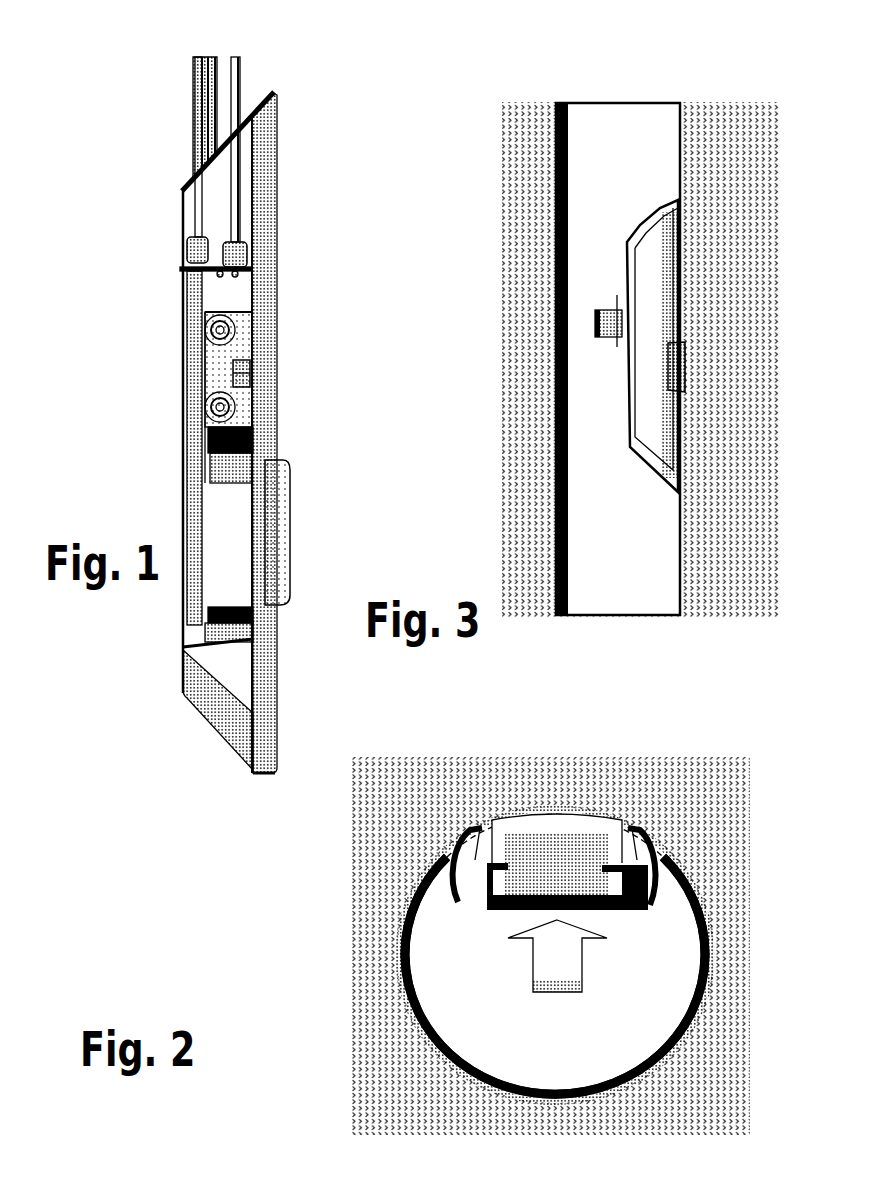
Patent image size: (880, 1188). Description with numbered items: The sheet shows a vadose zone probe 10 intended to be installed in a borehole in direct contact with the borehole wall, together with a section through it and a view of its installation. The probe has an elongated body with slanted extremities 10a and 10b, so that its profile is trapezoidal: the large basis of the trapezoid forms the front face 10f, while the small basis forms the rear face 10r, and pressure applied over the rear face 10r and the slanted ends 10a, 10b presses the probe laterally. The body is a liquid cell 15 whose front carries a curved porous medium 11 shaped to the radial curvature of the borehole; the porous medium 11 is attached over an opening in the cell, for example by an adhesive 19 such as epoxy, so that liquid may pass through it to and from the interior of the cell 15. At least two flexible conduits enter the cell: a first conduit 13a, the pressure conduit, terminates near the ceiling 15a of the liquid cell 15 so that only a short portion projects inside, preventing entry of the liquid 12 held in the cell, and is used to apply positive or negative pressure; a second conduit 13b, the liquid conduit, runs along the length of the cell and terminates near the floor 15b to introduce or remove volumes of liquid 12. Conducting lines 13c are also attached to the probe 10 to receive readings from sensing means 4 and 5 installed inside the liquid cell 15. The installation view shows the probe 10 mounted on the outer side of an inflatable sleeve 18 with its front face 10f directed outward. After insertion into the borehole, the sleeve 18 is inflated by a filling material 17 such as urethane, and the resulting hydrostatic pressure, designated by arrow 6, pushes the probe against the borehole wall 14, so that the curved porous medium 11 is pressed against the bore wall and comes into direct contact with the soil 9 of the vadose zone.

In FIG. 1, the sensing means 4 is at (222, 393).
In FIG. 1, the sensing means 5 is at (248, 372).
In FIG. 3, the arrow designating hydrostatic pressure 6 is at (595, 325).
In FIG. 2, the arrow designating hydrostatic pressure 6 is at (582, 962).
In FIG. 3, the soil 9 is at (688, 688).
In FIG. 2, the soil 9 is at (718, 790).
In FIG. 1, the vadose zone probe 10 is at (196, 421).
In FIG. 3, the vadose zone probe 10 is at (660, 252).
In FIG. 1, the slanted extremity 10a is at (264, 95).
In FIG. 1, the slanted extremity 10b is at (213, 733).
In FIG. 1, the front face 10f is at (277, 273).
In FIG. 1, the rear face 10r is at (183, 473).
In FIG. 1, the curved porous medium 11 is at (293, 497).
In FIG. 3, the curved porous medium 11 is at (687, 367).
In FIG. 2, the curved porous medium 11 is at (557, 823).
In FIG. 1, the liquid 12 is at (243, 393).
In FIG. 2, the liquid 12 is at (568, 875).
In FIG. 1, the first conduit 13a is at (240, 190).
In FIG. 1, the second conduit 13b is at (195, 218).
In FIG. 1, the conducting lines 13c is at (219, 58).
In FIG. 3, the borehole wall 14 is at (556, 130).
In FIG. 2, the borehole wall 14 is at (445, 845).
In FIG. 1, the liquid cell 15 is at (183, 400).
In FIG. 2, the liquid cell 15 is at (487, 883).
In FIG. 1, the ceiling of liquid cell 15a is at (210, 283).
In FIG. 1, the floor of liquid cell 15b is at (222, 647).
In FIG. 3, the filling material 17 is at (588, 497).
In FIG. 2, the filling material 17 is at (477, 992).
In FIG. 3, the inflatable sleeve 18 is at (557, 245).
In FIG. 2, the inflatable sleeve 18 is at (580, 1092).
In FIG. 2, the adhesive 19 is at (485, 853).